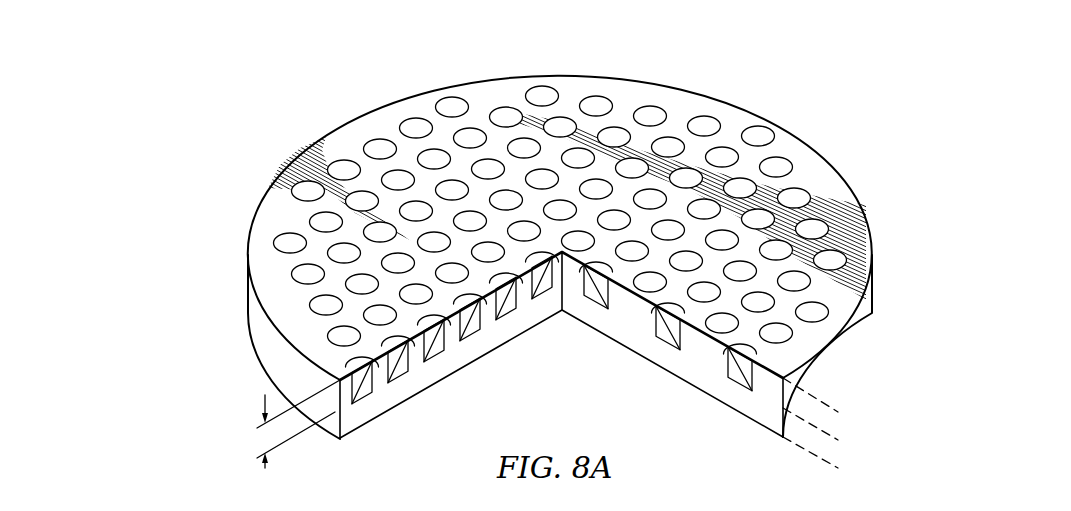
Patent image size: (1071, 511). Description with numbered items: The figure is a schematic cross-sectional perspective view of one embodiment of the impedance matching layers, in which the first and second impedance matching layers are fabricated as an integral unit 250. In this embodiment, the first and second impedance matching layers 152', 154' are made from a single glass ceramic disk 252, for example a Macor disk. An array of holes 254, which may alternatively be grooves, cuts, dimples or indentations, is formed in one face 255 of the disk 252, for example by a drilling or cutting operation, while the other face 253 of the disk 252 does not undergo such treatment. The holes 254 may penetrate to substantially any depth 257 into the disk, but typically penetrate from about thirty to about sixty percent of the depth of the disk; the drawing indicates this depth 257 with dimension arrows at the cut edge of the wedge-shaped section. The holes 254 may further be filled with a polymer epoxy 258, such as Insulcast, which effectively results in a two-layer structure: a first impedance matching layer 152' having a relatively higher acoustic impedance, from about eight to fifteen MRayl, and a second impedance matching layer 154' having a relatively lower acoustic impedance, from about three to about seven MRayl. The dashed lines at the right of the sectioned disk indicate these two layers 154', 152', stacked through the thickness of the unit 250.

The integral unit 250 is at (402, 83).
The glass ceramic disk 252 is at (630, 312).
The other face 253 is at (703, 390).
The holes 254 is at (757, 137).
The face 255 is at (638, 90).
The depth 257 is at (256, 447).
The polymer epoxy 258 is at (473, 320).
The second impedance matching layer 154' is at (845, 409).
The first impedance matching layer 152' is at (845, 460).